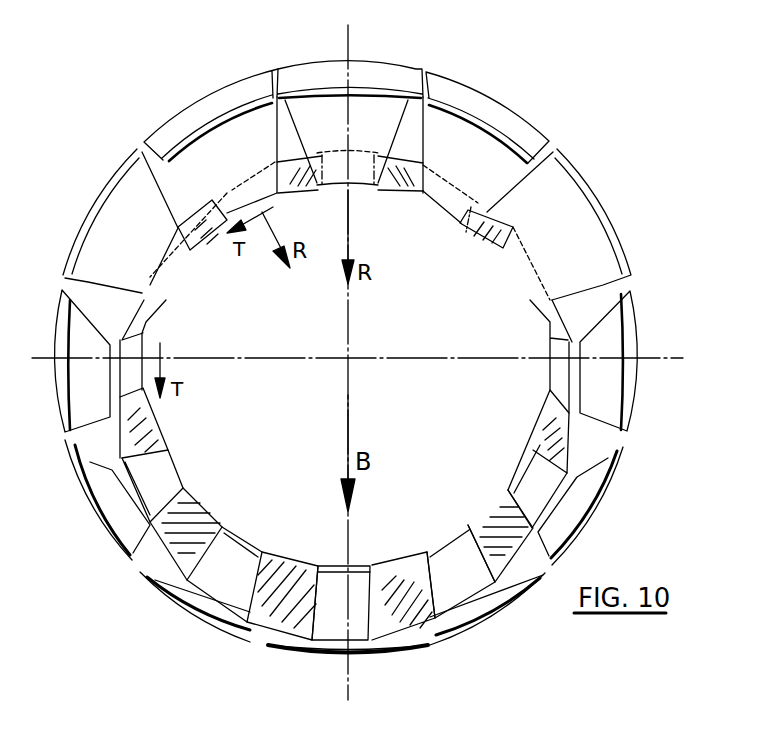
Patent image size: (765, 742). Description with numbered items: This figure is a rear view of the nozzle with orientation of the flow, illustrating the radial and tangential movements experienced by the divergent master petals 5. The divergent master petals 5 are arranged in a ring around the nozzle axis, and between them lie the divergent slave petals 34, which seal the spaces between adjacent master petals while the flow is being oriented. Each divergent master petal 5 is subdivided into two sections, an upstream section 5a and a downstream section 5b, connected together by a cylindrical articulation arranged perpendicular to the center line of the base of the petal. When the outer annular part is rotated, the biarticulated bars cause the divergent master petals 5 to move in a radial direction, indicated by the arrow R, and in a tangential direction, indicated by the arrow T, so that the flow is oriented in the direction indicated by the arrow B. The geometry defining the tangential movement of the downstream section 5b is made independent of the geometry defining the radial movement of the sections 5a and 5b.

The divergent master petal 5 is at (358, 190).
The upstream section of divergent master petal 5a is at (347, 562).
The downstream section of divergent master petal 5b is at (365, 601).
The divergent slave petal 34 is at (487, 247).